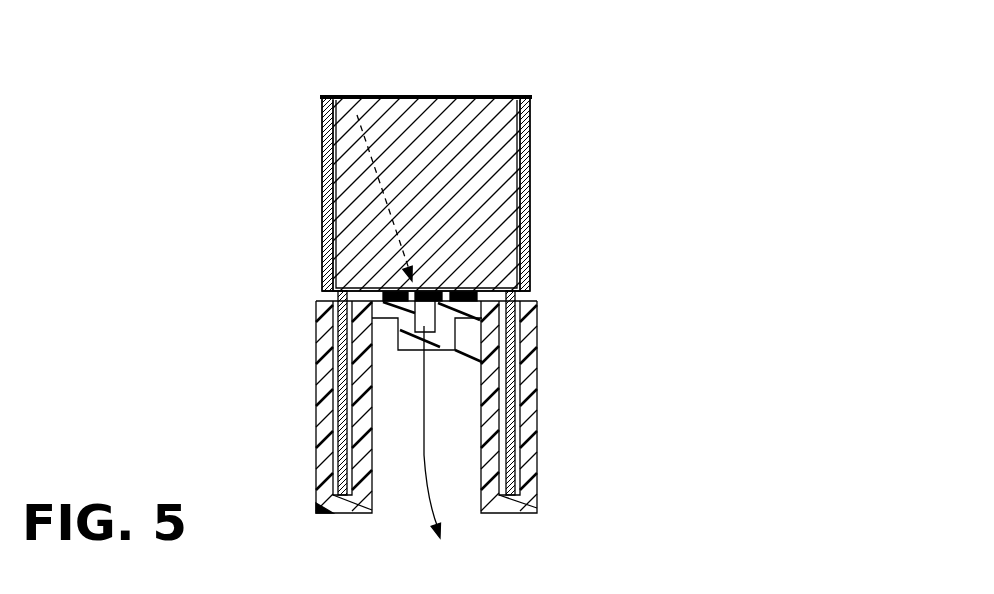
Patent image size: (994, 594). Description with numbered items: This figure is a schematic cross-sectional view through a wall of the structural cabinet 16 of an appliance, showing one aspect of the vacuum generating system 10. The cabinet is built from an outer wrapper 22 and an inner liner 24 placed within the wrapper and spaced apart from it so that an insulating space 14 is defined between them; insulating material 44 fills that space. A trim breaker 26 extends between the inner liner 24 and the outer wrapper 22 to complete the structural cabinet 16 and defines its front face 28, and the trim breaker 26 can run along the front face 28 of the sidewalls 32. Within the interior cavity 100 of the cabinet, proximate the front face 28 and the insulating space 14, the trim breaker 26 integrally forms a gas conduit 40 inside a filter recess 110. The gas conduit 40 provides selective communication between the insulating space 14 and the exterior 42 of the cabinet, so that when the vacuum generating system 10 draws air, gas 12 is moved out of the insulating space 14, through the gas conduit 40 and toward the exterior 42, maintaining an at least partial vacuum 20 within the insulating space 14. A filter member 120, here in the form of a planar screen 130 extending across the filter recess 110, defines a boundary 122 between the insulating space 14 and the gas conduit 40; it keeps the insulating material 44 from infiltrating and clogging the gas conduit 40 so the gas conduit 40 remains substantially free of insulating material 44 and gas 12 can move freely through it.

The vacuum generating system 10 is at (410, 412).
The gas 12 is at (320, 177).
The insulating space 14 is at (336, 217).
The structural cabinet 16 is at (549, 122).
The at least partial vacuum 20 is at (490, 122).
The outer wrapper 22 is at (532, 156).
The inner liner 24 is at (327, 256).
The trim breaker 26 is at (316, 432).
The front face 28 is at (336, 513).
The sidewalls 32 is at (322, 120).
The gas conduit 40 is at (455, 335).
The exterior 42 is at (537, 478).
The insulating material 44 is at (445, 125).
The interior cavity 100 is at (335, 299).
The filter recess 110 is at (445, 327).
The filter member 120 is at (328, 272).
The boundary 122 is at (437, 291).
The planar screen 130 is at (470, 292).